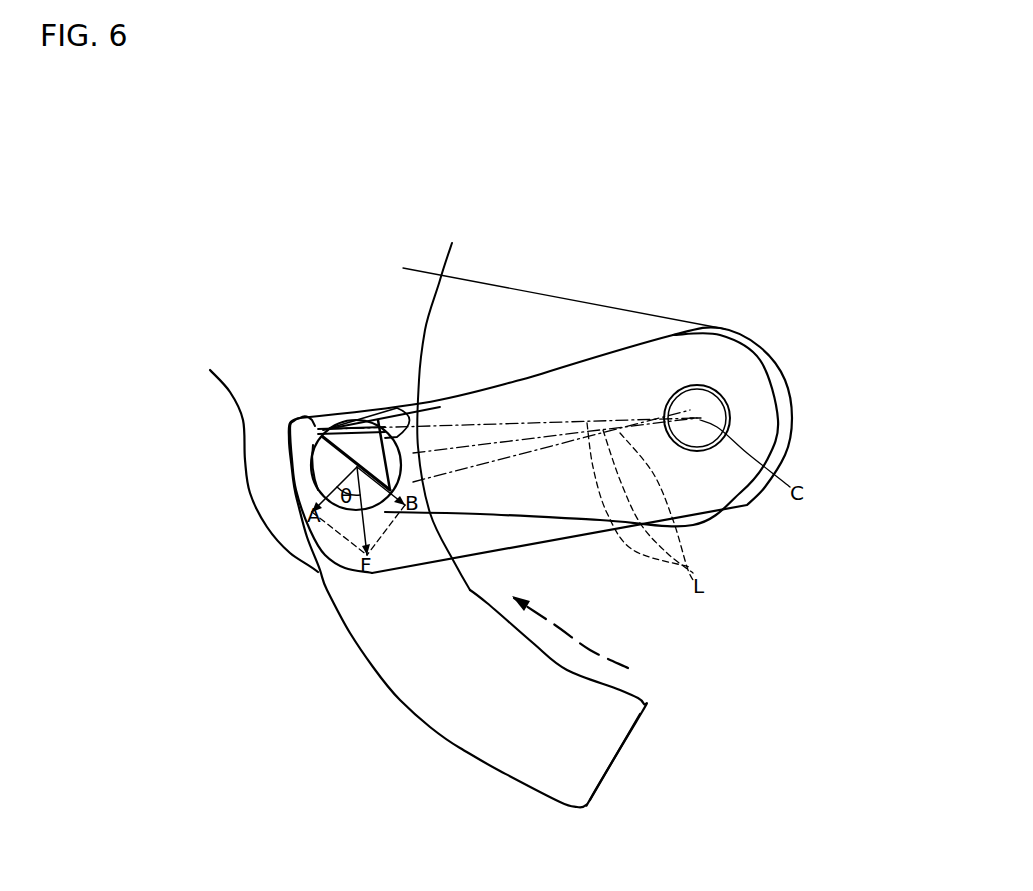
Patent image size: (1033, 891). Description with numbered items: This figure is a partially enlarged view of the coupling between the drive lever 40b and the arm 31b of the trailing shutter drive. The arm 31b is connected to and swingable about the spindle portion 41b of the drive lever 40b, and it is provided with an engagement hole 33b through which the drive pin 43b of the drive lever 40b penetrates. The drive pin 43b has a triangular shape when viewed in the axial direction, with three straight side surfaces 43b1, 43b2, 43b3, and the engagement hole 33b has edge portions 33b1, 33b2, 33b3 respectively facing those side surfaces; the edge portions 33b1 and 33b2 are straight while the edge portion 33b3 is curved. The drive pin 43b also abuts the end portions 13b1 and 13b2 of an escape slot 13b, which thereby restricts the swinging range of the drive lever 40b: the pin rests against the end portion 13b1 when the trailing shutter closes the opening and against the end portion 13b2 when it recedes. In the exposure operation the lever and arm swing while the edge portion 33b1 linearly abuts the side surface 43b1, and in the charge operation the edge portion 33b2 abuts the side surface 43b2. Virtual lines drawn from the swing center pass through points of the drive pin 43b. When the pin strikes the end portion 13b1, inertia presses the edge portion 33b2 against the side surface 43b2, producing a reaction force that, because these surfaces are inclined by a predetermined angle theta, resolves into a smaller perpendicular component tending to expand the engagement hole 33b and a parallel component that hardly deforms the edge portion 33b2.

The escape slot 13b is at (422, 712).
The end portion of escape slot 13b1 is at (307, 400).
The end portion of escape slot 13b2 is at (608, 779).
The arm 31b is at (228, 392).
The engagement hole 33b is at (404, 449).
The edge portion 33b1 is at (372, 400).
The edge portion 33b2 is at (308, 420).
The edge portion 33b3 is at (413, 498).
The drive lever 40b is at (673, 335).
The spindle portion 41b is at (717, 405).
The drive pin 43b is at (387, 400).
The side surface 43b1 is at (353, 400).
The side surface 43b2 is at (338, 428).
The side surface 43b3 is at (450, 403).